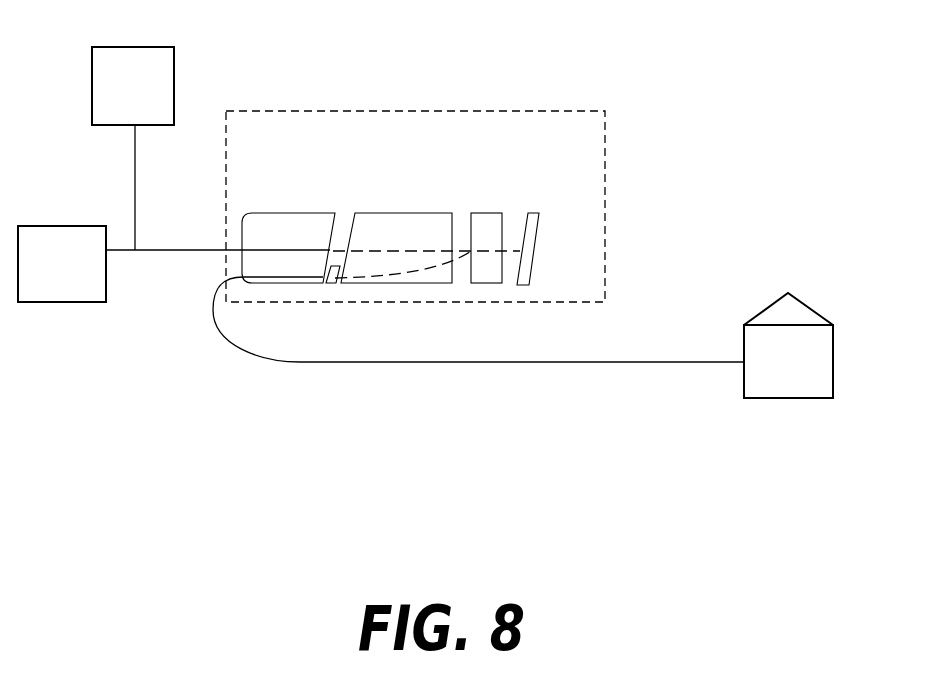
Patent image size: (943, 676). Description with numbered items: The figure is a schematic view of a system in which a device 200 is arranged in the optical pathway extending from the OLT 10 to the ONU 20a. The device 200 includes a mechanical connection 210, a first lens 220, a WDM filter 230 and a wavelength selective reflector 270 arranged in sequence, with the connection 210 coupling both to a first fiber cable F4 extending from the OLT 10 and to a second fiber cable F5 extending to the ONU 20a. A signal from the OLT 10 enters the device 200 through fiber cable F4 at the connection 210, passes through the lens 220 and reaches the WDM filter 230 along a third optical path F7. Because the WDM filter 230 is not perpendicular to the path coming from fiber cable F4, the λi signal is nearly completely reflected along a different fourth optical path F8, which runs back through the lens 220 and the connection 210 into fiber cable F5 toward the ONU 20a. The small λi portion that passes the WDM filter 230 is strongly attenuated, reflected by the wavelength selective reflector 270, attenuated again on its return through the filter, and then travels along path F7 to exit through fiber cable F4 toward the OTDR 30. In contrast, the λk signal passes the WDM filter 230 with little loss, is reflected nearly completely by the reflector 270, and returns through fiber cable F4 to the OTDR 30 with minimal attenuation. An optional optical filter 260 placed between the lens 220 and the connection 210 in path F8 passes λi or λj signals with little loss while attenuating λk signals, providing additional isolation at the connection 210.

The OLT 10 is at (47, 280).
The OTDR 30 is at (118, 104).
The ONU 20a is at (764, 377).
The device 200 is at (323, 77).
The mechanical connection 210 is at (303, 231).
The first lens 220 is at (400, 230).
The WDM filter 230 is at (482, 233).
The optical filter 260 is at (331, 267).
The wavelength selective reflector 270 is at (538, 218).
The first fiber cable F4 is at (185, 248).
The second fiber cable F5 is at (390, 362).
The third optical path F7 is at (431, 247).
The fourth optical path F8 is at (417, 272).